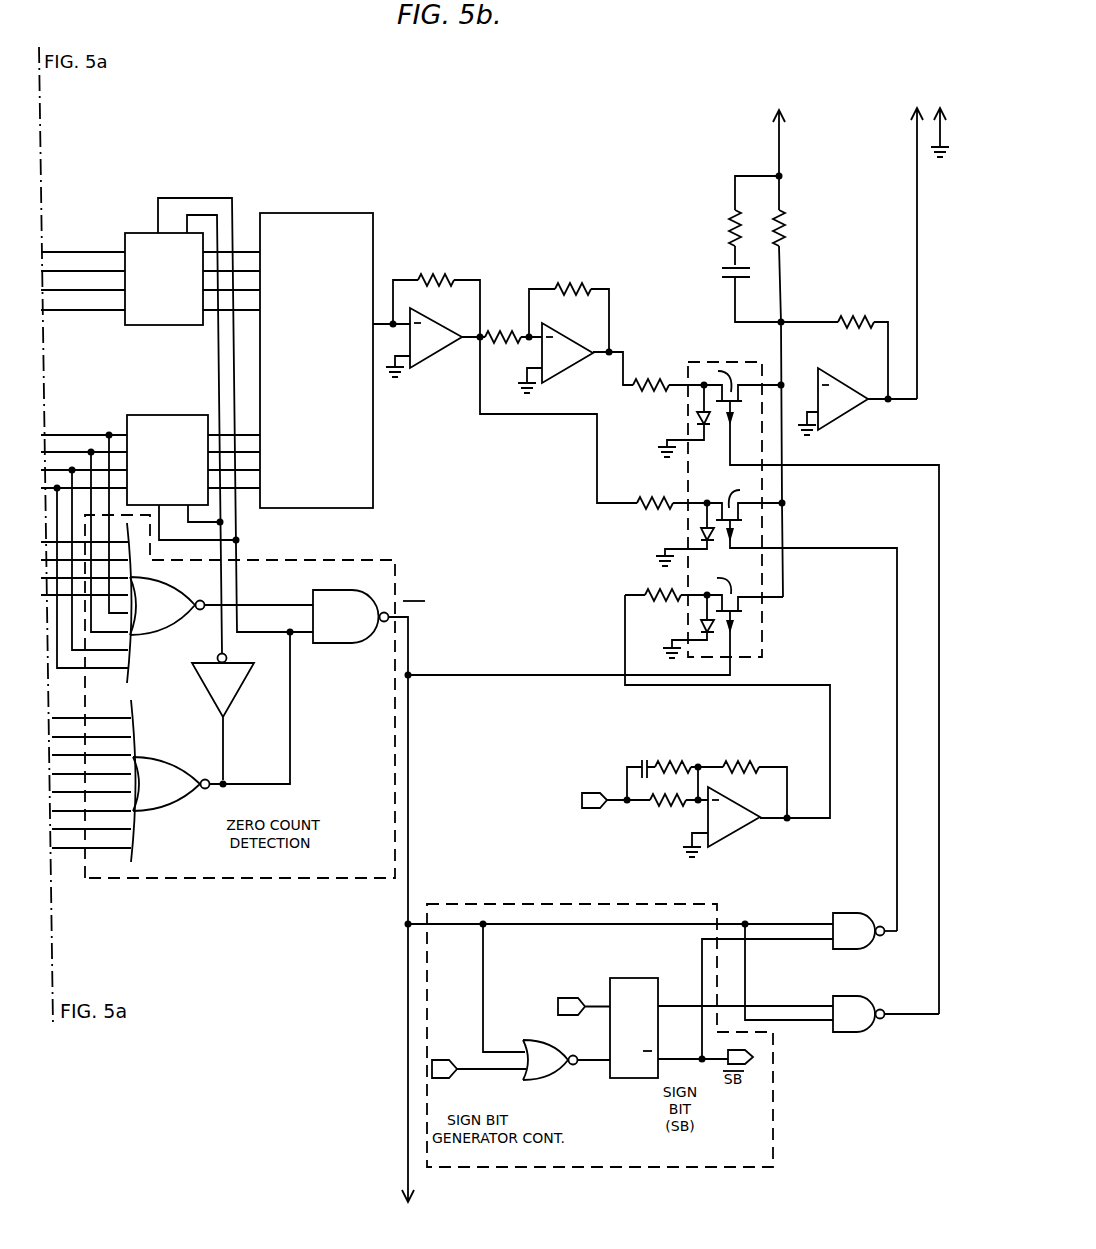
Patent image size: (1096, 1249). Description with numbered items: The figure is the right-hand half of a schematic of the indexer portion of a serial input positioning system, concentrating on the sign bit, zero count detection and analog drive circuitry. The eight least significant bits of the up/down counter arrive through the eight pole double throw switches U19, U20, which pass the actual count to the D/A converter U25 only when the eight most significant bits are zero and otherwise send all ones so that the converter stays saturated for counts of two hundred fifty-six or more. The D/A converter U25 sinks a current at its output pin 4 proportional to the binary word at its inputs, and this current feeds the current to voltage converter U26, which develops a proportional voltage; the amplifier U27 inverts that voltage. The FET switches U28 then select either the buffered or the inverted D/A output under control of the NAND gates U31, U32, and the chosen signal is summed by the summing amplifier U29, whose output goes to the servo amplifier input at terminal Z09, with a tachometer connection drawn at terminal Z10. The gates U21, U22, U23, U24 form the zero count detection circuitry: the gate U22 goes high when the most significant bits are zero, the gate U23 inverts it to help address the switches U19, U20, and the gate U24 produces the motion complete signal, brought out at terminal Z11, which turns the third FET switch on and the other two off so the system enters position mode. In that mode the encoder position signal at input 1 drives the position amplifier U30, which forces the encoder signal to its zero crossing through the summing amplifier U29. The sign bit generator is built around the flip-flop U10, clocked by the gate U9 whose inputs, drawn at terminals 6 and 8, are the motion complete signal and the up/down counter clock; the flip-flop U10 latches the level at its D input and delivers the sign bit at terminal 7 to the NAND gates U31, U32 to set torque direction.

The 8 pole double throw switch U19 is at (177, 425).
The 8 pole double throw switch U20 is at (150, 541).
The D/A converter U25 is at (316, 360).
The current to voltage converter U26 is at (511, 388).
The amplifier U27 is at (611, 338).
The FET switches U28 is at (673, 688).
The summing amplifier U29 is at (849, 375).
The position amplifier U30 is at (681, 808).
The gate U21 is at (177, 603).
The gate U22 is at (173, 746).
The gate U23 is at (223, 717).
The gate U24 is at (431, 884).
The NAND gate U31 is at (865, 931).
The NAND gate U32 is at (868, 1027).
The gate U9 is at (546, 1002).
The flip-flop U10 is at (721, 1008).
The servo amp input terminal Z09 is at (911, 227).
The tachometer terminal Z10 is at (758, 330).
The motion complete terminal Z11 is at (427, 1198).
The output pin 4 is at (391, 317).
The position encoder input terminal 1 is at (594, 800).
The flip-flop D input terminal 6 is at (584, 1006).
The sign bit output terminal 7 is at (740, 1057).
The NOR gate input terminal 8 is at (479, 1069).